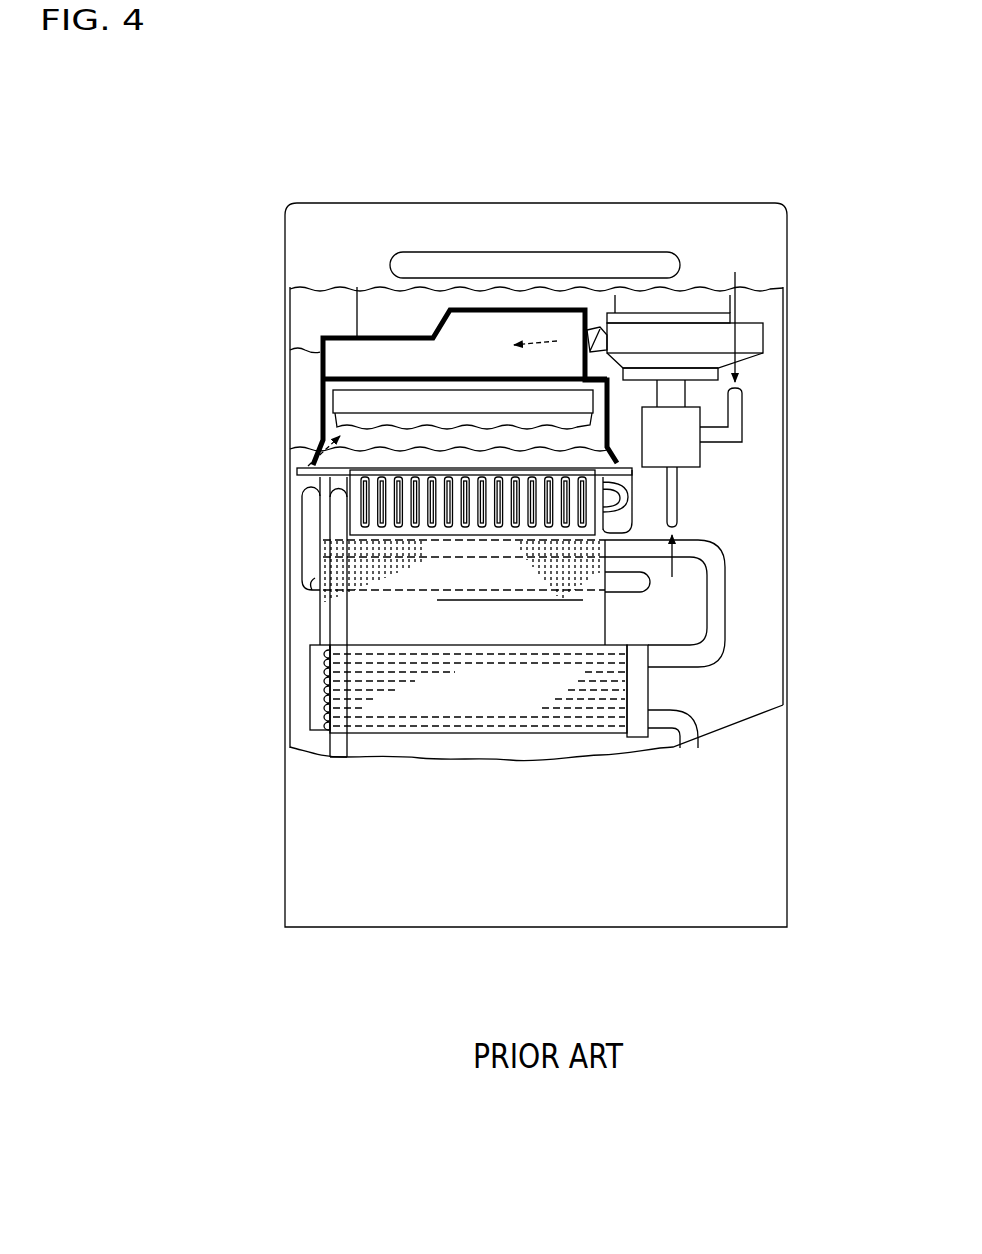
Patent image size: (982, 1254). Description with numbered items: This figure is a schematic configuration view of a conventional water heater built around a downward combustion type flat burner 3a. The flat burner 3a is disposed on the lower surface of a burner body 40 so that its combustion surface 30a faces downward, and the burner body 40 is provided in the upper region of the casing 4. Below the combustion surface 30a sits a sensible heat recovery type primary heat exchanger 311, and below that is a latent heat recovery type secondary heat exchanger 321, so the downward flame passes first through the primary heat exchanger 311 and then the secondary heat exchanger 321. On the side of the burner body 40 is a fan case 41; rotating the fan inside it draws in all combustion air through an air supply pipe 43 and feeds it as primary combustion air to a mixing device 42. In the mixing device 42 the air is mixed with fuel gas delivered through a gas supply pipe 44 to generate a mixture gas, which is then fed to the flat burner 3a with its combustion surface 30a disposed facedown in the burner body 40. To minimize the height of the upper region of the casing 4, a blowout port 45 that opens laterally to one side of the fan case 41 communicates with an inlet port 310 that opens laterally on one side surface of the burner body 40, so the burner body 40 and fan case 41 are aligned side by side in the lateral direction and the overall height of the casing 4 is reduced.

The casing 4 is at (787, 251).
The burner body 40 is at (322, 352).
The flat burner 3a is at (343, 402).
The combustion surface 30a is at (300, 448).
The inlet port 310 is at (580, 336).
The primary heat exchanger 311 is at (433, 534).
The secondary heat exchanger 321 is at (393, 646).
The fan case 41 is at (765, 340).
The mixing device 42 is at (700, 452).
The air supply pipe 43 is at (742, 416).
The gas supply pipe 44 is at (678, 496).
The blowout port 45 is at (585, 352).